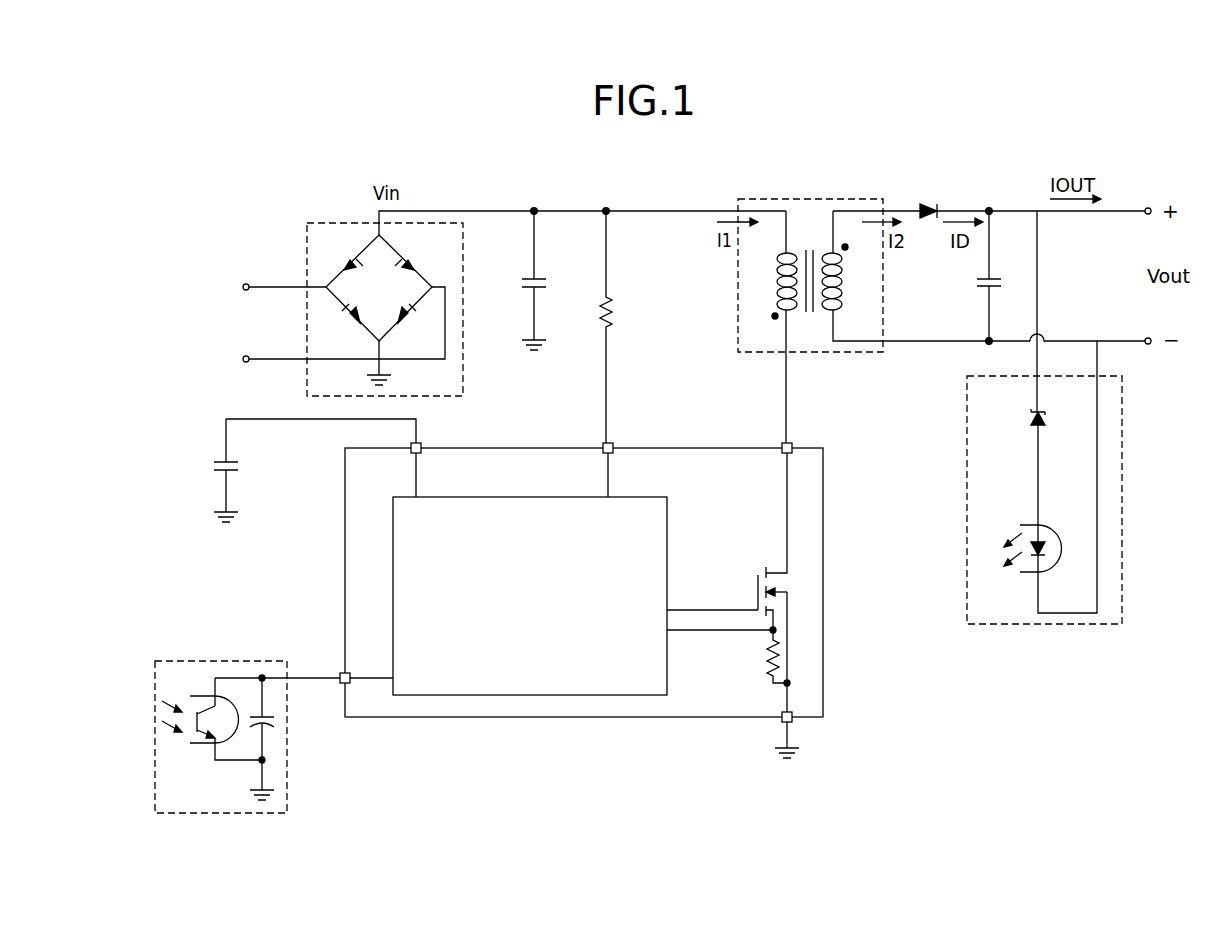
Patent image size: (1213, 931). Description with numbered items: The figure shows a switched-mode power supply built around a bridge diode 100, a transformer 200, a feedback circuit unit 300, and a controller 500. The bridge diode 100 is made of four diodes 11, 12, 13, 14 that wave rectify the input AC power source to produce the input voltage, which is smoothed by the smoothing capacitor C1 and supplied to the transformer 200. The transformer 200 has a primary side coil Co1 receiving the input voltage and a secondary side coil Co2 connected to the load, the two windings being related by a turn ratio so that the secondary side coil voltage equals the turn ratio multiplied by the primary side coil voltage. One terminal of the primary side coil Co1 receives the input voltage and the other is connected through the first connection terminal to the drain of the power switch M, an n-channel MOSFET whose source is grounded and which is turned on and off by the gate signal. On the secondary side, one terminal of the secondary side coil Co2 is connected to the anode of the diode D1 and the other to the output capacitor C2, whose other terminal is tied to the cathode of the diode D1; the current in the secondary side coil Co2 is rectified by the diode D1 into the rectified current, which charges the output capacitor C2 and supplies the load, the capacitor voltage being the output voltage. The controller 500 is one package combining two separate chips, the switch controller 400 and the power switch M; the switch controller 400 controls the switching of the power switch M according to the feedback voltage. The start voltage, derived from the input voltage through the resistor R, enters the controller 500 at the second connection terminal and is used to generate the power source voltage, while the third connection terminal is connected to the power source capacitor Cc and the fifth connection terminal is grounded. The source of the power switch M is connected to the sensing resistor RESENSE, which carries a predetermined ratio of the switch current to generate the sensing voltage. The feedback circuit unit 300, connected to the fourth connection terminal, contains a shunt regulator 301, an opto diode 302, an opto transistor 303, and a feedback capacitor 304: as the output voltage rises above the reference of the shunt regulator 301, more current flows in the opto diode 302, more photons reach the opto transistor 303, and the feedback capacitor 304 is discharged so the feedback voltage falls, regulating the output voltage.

The diode 11 is at (345, 252).
The diode 12 is at (413, 252).
The diode 13 is at (344, 323).
The diode 14 is at (415, 323).
The bridge diode 100 is at (370, 309).
The transformer 200 is at (859, 293).
The feedback circuit unit 300 is at (1077, 417).
The shunt regulator 301 is at (1040, 412).
The opto diode 302 is at (1058, 526).
The opto transistor 303 is at (205, 745).
The feedback capacitor 304 is at (272, 725).
The switch controller 400 is at (667, 518).
The controller 500 is at (615, 593).
The smoothing capacitor C1 is at (519, 280).
The output capacitor C2 is at (974, 276).
The power source capacitor Cc is at (292, 470).
The resistor R is at (597, 327).
The diode D1 is at (928, 196).
The power switch M is at (737, 582).
The sensing resistor RESENSE is at (779, 653).
The primary side coil Co1 is at (778, 304).
The secondary side coil Co2 is at (850, 304).